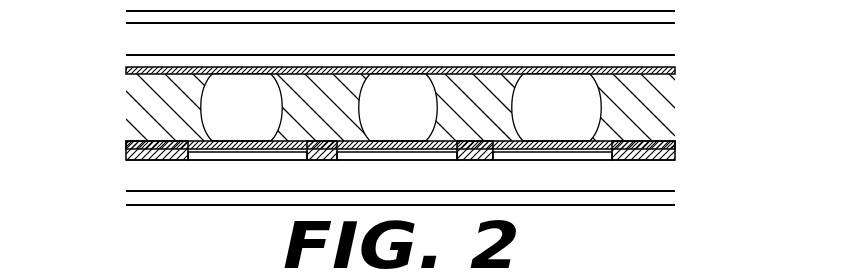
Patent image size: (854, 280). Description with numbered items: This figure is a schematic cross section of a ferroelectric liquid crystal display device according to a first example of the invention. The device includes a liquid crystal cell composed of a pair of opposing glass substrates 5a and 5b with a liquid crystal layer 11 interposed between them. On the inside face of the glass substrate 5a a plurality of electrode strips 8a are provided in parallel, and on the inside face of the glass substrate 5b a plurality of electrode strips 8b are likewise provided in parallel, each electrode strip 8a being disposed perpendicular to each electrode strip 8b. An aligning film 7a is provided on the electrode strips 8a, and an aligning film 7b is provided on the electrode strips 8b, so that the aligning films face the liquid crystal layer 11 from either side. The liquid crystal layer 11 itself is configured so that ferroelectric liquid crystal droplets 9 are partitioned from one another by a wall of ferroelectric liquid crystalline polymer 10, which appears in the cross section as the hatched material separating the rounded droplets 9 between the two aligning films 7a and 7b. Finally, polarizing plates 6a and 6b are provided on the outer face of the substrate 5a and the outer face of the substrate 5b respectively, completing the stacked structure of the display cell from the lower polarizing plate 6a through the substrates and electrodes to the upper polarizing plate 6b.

The glass substrate 5a is at (672, 175).
The glass substrate 5b is at (670, 42).
The polarizing plate 6a is at (677, 200).
The polarizing plate 6b is at (678, 20).
The aligning film 7a is at (677, 152).
The aligning film 7b is at (676, 72).
The electrode strips 8a is at (552, 157).
The electrode strips 8b is at (564, 62).
The ferroelectric liquid crystal droplets 9 is at (247, 92).
The ferroelectric liquid crystalline polymer 10 is at (169, 100).
The liquid crystal layer 11 is at (98, 143).